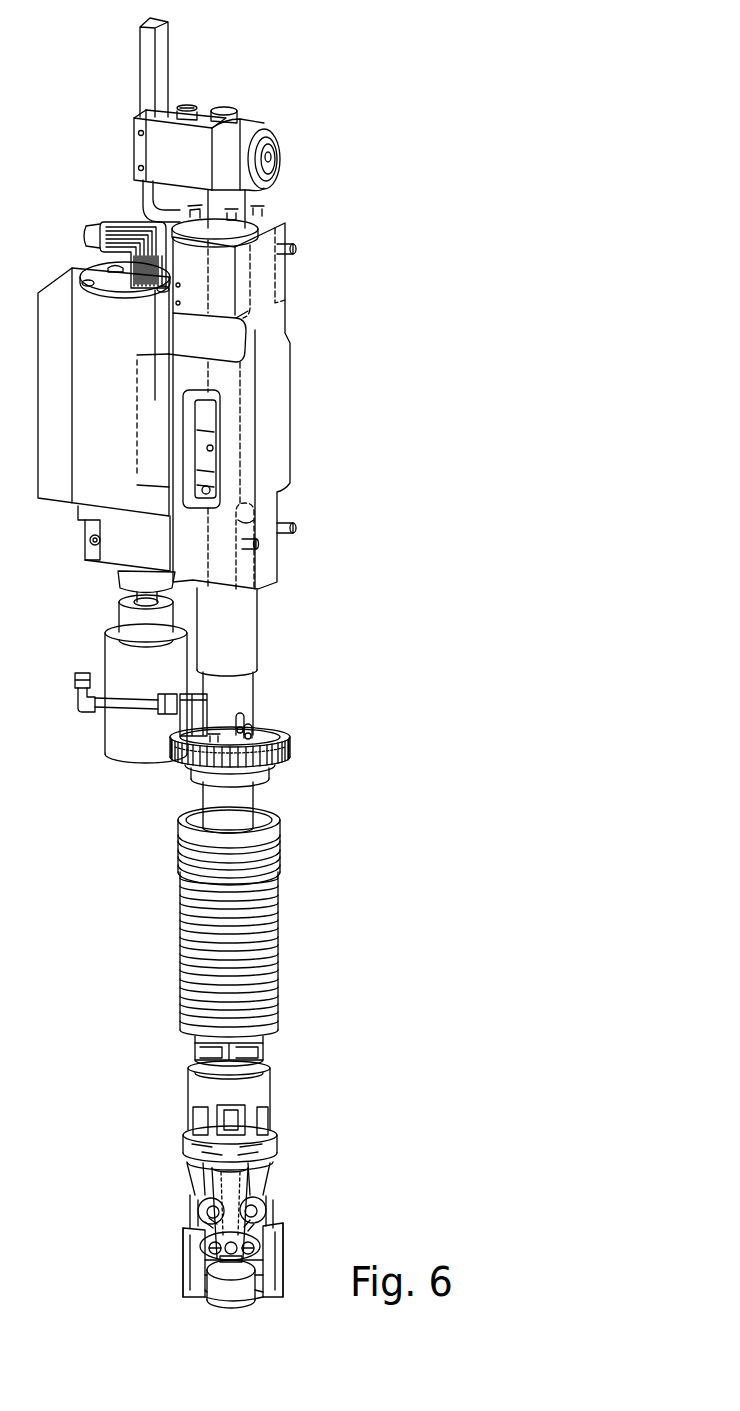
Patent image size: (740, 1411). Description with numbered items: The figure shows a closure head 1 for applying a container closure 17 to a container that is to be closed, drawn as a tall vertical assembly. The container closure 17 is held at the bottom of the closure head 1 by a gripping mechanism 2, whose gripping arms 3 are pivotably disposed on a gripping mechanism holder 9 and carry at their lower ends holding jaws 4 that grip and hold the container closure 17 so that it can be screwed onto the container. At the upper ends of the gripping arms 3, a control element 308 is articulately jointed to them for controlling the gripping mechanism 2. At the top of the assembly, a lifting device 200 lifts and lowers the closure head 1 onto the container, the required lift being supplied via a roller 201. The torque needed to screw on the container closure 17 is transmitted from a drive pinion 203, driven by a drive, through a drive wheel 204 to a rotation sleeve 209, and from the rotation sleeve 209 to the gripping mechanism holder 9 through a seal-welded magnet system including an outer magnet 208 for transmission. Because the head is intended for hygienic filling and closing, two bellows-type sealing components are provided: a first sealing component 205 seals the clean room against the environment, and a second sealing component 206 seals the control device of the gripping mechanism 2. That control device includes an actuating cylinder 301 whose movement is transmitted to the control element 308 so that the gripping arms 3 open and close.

The lifting device 200 is at (260, 96).
The roller 201 is at (268, 132).
The actuating cylinder 301 is at (274, 421).
The drive pinion 203 is at (137, 738).
The drive wheel 204 is at (272, 754).
The rotation sleeve 209 is at (235, 801).
The first sealing component 205 is at (272, 970).
The outer magnet 208 is at (253, 1087).
The closure head 1 is at (351, 899).
The gripping mechanism holder 9 is at (237, 1182).
The second sealing component 206 is at (212, 1190).
The control element 308 is at (253, 1202).
The gripping mechanism 2 is at (151, 1249).
The gripping arm 3 is at (272, 1243).
The holding jaw 4 is at (207, 1293).
The container closure 17 is at (242, 1298).